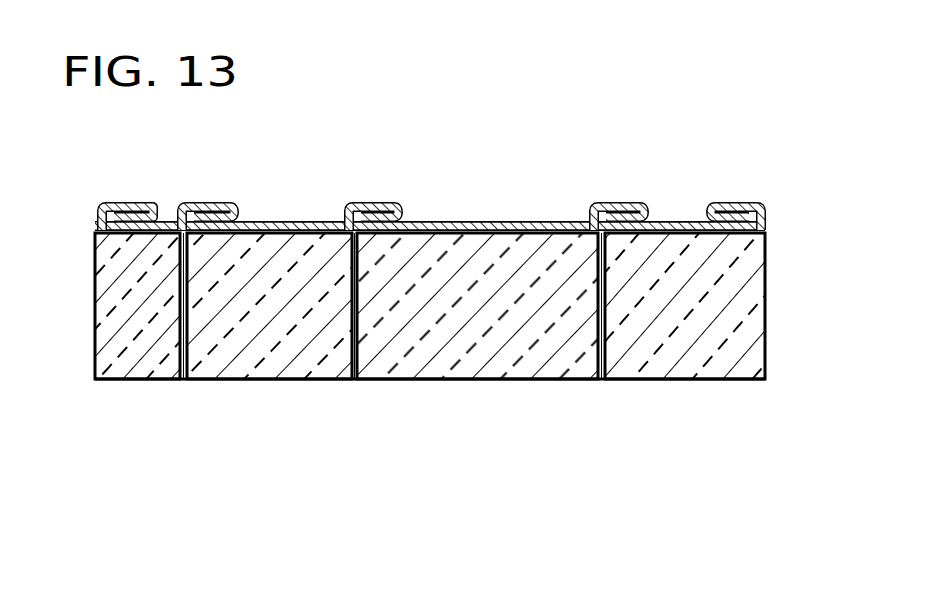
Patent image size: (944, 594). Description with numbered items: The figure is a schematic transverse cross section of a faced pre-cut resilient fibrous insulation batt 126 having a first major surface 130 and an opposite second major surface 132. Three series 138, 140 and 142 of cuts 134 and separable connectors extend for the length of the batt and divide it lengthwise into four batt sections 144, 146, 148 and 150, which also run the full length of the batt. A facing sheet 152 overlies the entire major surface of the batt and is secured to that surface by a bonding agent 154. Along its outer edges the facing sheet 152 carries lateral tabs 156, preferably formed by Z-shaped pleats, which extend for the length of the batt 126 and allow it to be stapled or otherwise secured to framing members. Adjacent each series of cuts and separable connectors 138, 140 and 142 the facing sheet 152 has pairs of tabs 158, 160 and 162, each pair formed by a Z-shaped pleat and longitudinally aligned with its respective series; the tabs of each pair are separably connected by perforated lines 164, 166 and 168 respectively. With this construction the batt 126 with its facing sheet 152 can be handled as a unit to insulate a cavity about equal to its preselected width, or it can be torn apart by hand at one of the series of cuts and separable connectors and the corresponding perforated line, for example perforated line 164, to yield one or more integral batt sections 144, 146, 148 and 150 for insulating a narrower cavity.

The faced pre-cut resilient fibrous insulation batt 126 is at (452, 112).
The first major surface 130 is at (430, 177).
The second major surface 132 is at (488, 380).
The cuts 134 is at (180, 378).
The series of cuts and separable connectors 138 is at (612, 389).
The series of cuts and separable connectors 140 is at (361, 389).
The series of cuts and separable connectors 142 is at (186, 390).
The batt section 144 is at (710, 307).
The batt section 146 is at (493, 305).
The batt section 148 is at (285, 302).
The batt section 150 is at (158, 302).
The facing sheet 152 is at (430, 191).
The bonding agent 154 is at (430, 180).
The lateral tabs 156 is at (128, 202).
The pair of tabs 158 is at (630, 203).
The pair of tabs 160 is at (375, 203).
The pair of tabs 162 is at (220, 203).
The perforated line 164 is at (648, 213).
The perforated line 166 is at (400, 212).
The perforated line 168 is at (240, 212).